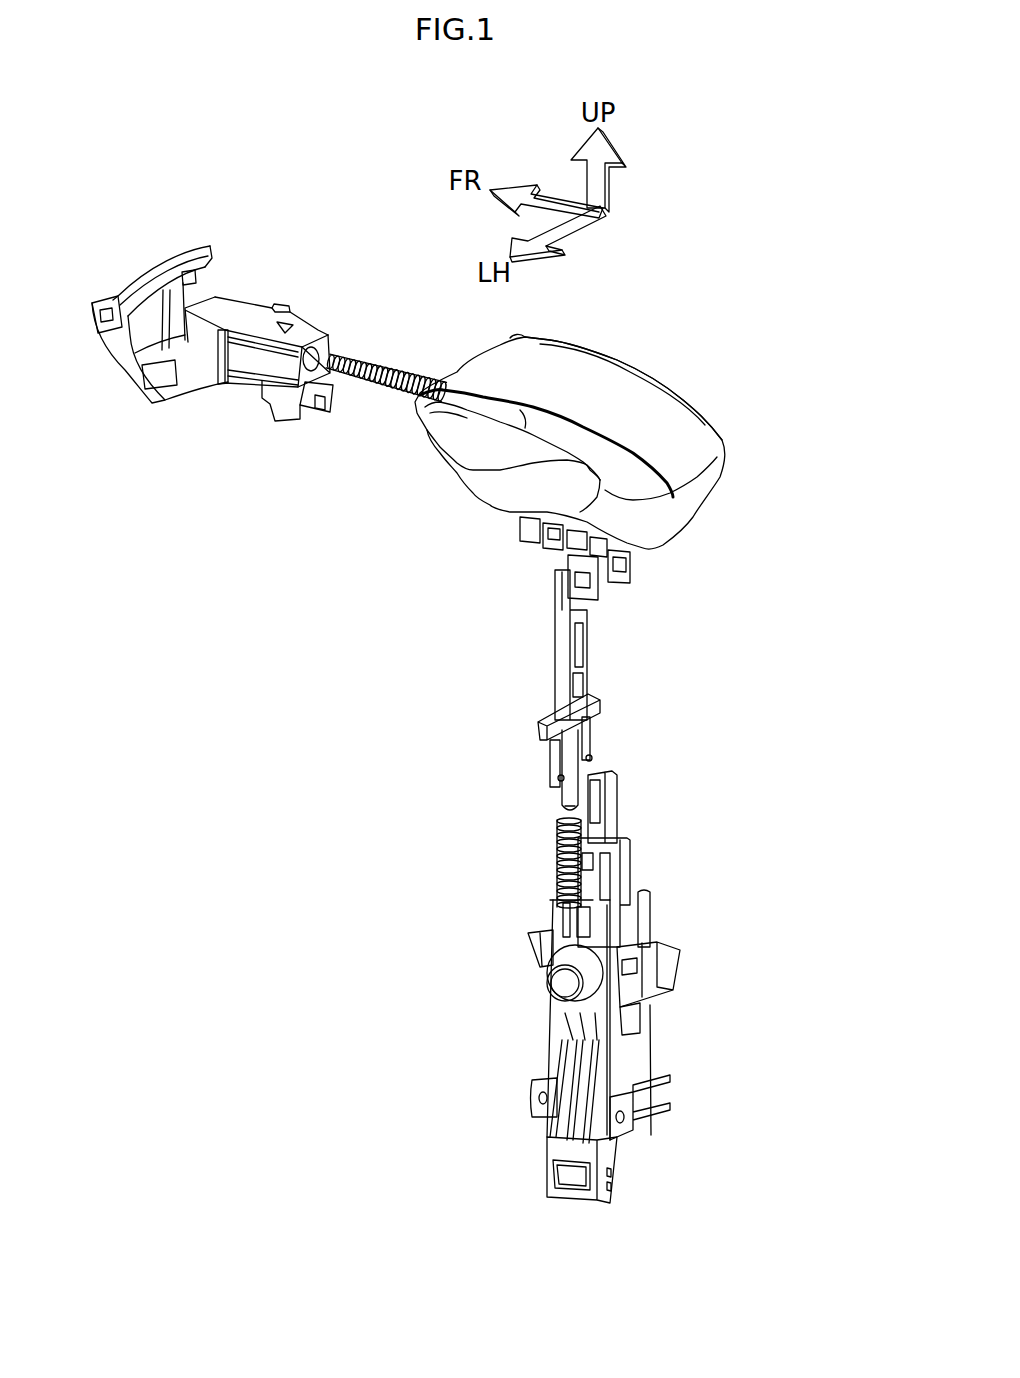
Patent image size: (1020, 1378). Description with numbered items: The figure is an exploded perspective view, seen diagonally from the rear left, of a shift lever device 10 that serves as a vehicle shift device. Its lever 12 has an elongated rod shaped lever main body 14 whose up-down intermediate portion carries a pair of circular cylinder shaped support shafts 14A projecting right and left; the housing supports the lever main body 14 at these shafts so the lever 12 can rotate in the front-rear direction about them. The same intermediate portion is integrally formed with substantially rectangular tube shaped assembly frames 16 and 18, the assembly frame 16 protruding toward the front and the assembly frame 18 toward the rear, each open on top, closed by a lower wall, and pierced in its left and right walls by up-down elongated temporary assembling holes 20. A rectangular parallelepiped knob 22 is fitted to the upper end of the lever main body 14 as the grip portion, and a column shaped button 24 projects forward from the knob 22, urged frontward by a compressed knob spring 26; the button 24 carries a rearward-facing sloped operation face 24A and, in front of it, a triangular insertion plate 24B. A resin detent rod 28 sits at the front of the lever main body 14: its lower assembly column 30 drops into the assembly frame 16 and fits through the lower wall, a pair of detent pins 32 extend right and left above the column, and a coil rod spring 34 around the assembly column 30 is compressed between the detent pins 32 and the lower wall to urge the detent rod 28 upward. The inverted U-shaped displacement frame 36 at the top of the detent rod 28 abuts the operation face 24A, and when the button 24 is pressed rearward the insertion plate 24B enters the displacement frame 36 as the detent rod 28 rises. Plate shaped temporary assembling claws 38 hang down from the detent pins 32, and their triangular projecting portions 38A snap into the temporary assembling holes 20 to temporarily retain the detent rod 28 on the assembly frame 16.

The shift lever device 10 is at (257, 184).
The lever 12 is at (731, 428).
The lever main body 14 is at (555, 1048).
The support shafts 14A is at (550, 997).
The assembly frame 16 is at (547, 913).
The assembly frame 18 is at (653, 942).
The temporary assembling holes 20 is at (640, 930).
The knob 22 is at (615, 348).
The button 24 is at (242, 302).
The operation face 24A is at (320, 420).
The insertion plate 24B is at (290, 410).
The knob spring 26 is at (385, 362).
The detent rod 28 is at (548, 657).
The assembly column 30 is at (565, 816).
The detent pins 32 is at (600, 704).
The rod spring 34 is at (556, 842).
The displacement frame 36 is at (545, 578).
The temporary assembling claws 38 is at (592, 736).
The projecting portion 38A is at (590, 767).